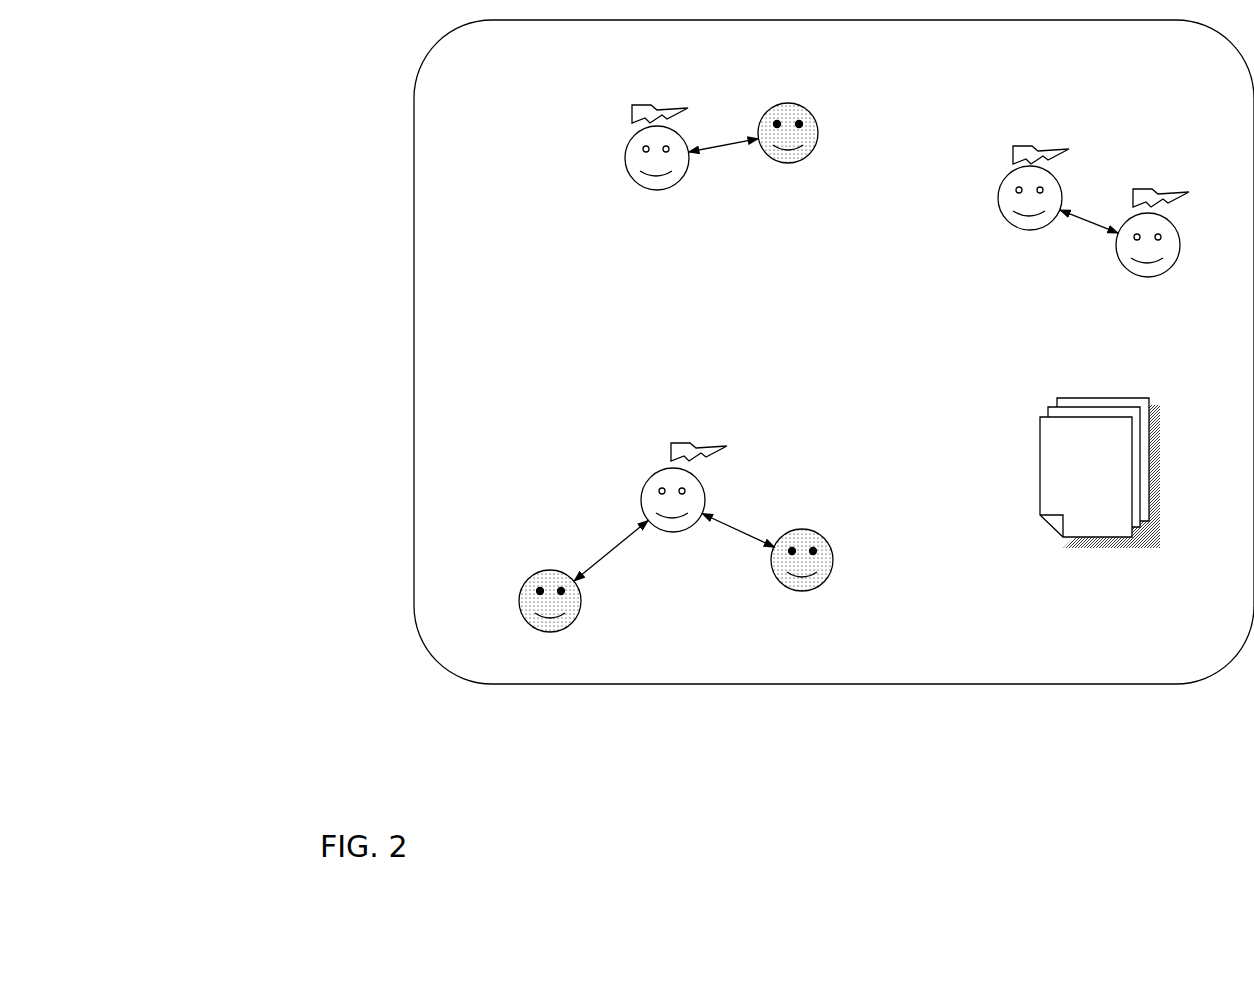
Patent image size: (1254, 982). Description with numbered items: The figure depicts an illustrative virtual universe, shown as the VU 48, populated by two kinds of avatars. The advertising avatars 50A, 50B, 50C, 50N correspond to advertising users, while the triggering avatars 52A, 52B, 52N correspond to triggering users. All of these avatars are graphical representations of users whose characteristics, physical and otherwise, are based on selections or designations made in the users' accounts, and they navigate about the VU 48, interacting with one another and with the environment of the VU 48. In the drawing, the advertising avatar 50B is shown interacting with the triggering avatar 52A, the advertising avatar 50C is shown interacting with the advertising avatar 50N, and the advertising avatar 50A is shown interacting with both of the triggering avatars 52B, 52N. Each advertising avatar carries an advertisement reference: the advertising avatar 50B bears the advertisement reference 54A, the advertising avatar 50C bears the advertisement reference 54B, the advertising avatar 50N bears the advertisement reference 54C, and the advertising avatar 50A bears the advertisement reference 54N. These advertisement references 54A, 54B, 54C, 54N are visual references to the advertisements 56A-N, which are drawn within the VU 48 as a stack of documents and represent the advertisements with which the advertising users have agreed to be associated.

The virtual universe 48 is at (414, 135).
The advertising avatar 50A is at (663, 470).
The advertising avatar 50B is at (624, 162).
The advertising avatar 50C is at (1039, 229).
The advertising avatar 50N is at (1137, 276).
The triggering avatar 52A is at (818, 146).
The triggering avatar 52B is at (818, 530).
The triggering avatar 52N is at (580, 619).
The advertisement reference 54A is at (654, 105).
The advertisement reference 54B is at (1037, 146).
The advertisement reference 54C is at (1156, 189).
The advertisement reference 54N is at (692, 443).
The advertisements 56A-N is at (1043, 438).